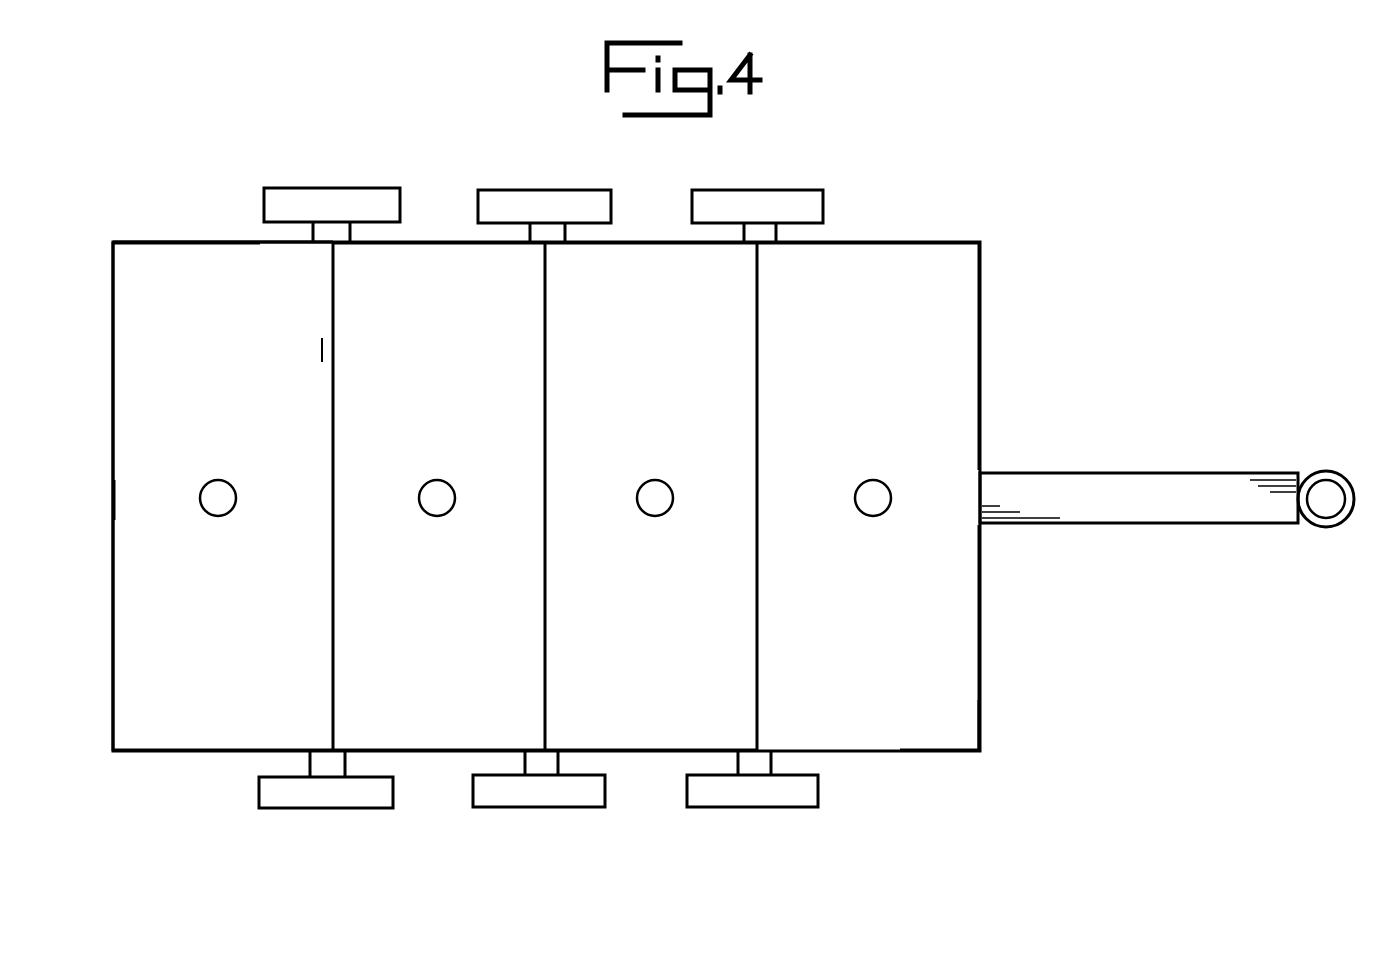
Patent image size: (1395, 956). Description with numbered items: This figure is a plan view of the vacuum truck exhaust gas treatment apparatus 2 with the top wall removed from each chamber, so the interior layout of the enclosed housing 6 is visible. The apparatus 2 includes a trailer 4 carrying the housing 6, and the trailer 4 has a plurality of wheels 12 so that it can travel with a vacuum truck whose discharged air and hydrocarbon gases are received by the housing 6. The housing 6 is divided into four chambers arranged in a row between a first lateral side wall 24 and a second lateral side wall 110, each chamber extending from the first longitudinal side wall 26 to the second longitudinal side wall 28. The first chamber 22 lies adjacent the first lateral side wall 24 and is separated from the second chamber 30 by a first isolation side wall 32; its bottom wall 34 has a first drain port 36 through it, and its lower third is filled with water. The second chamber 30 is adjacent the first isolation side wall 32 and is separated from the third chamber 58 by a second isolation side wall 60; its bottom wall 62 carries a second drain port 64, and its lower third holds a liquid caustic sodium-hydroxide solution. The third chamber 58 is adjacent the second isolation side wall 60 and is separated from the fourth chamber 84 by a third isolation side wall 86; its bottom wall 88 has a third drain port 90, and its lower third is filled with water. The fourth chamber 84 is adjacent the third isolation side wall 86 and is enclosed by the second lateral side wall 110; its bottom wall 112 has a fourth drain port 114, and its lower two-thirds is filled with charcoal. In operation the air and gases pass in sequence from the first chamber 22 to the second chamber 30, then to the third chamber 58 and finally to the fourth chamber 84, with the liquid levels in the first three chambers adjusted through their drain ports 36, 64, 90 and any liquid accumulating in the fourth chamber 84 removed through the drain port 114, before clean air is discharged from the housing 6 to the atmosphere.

The vacuum truck exhaust gas treatment apparatus 2 is at (958, 230).
The trailer 4 is at (1120, 478).
The enclosed housing 6 is at (145, 228).
The wheels 12 is at (805, 808).
The first chamber 22 is at (870, 258).
The first lateral side wall 24 is at (980, 364).
The first longitudinal side wall 26 is at (950, 752).
The second longitudinal side wall 28 is at (170, 243).
The second chamber 30 is at (663, 738).
The first isolation side wall 32 is at (758, 461).
The bottom wall 34 is at (972, 636).
The first drain port 36 is at (875, 492).
The third chamber 58 is at (458, 735).
The second isolation side wall 60 is at (546, 424).
The bottom wall 62 is at (630, 260).
The second drain port 64 is at (668, 488).
The fourth chamber 84 is at (192, 742).
The third isolation side wall 86 is at (334, 440).
The bottom wall 88 is at (425, 252).
The third drain port 90 is at (441, 490).
The second lateral side wall 110 is at (113, 390).
The bottom wall 112 is at (128, 487).
The fourth drain port 114 is at (224, 492).